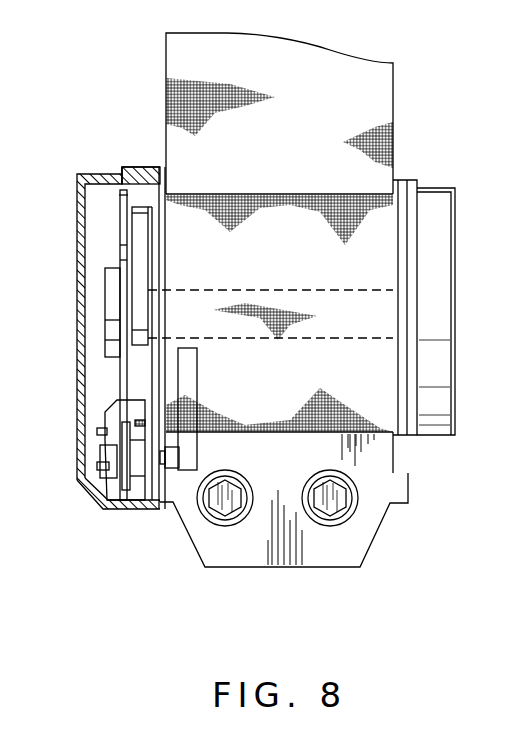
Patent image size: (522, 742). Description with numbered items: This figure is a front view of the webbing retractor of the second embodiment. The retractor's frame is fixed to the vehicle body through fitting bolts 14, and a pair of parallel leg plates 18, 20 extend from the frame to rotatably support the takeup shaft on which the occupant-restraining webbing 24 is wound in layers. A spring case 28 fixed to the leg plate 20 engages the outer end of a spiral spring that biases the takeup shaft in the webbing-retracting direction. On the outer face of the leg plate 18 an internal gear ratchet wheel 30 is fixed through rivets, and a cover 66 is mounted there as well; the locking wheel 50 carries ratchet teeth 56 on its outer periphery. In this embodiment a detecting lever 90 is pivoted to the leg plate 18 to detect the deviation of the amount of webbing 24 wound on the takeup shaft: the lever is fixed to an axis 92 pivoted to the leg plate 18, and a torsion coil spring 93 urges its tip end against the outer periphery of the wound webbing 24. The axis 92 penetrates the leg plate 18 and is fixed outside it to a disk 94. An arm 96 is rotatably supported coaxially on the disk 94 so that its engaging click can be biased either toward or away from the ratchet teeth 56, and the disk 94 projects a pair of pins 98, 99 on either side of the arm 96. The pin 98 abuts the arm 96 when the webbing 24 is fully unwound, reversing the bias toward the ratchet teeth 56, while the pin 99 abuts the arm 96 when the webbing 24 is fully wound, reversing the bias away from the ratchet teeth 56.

The fitting bolts 14 is at (233, 484).
The leg plate 18 is at (154, 230).
The leg plate 20 is at (410, 466).
The occupant-restraining webbing 24 is at (388, 121).
The spring case 28 is at (455, 220).
The internal gear ratchet wheel 30 is at (140, 267).
The locking wheel 50 is at (120, 200).
The ratchet teeth 56 is at (124, 173).
The cover 66 is at (89, 176).
The detecting lever 90 is at (197, 378).
The axis 92 is at (173, 500).
The torsion coil spring 93 is at (168, 452).
The disk 94 is at (116, 497).
The arm 96 is at (99, 449).
The pin 98 is at (100, 467).
The pin 99 is at (96, 431).